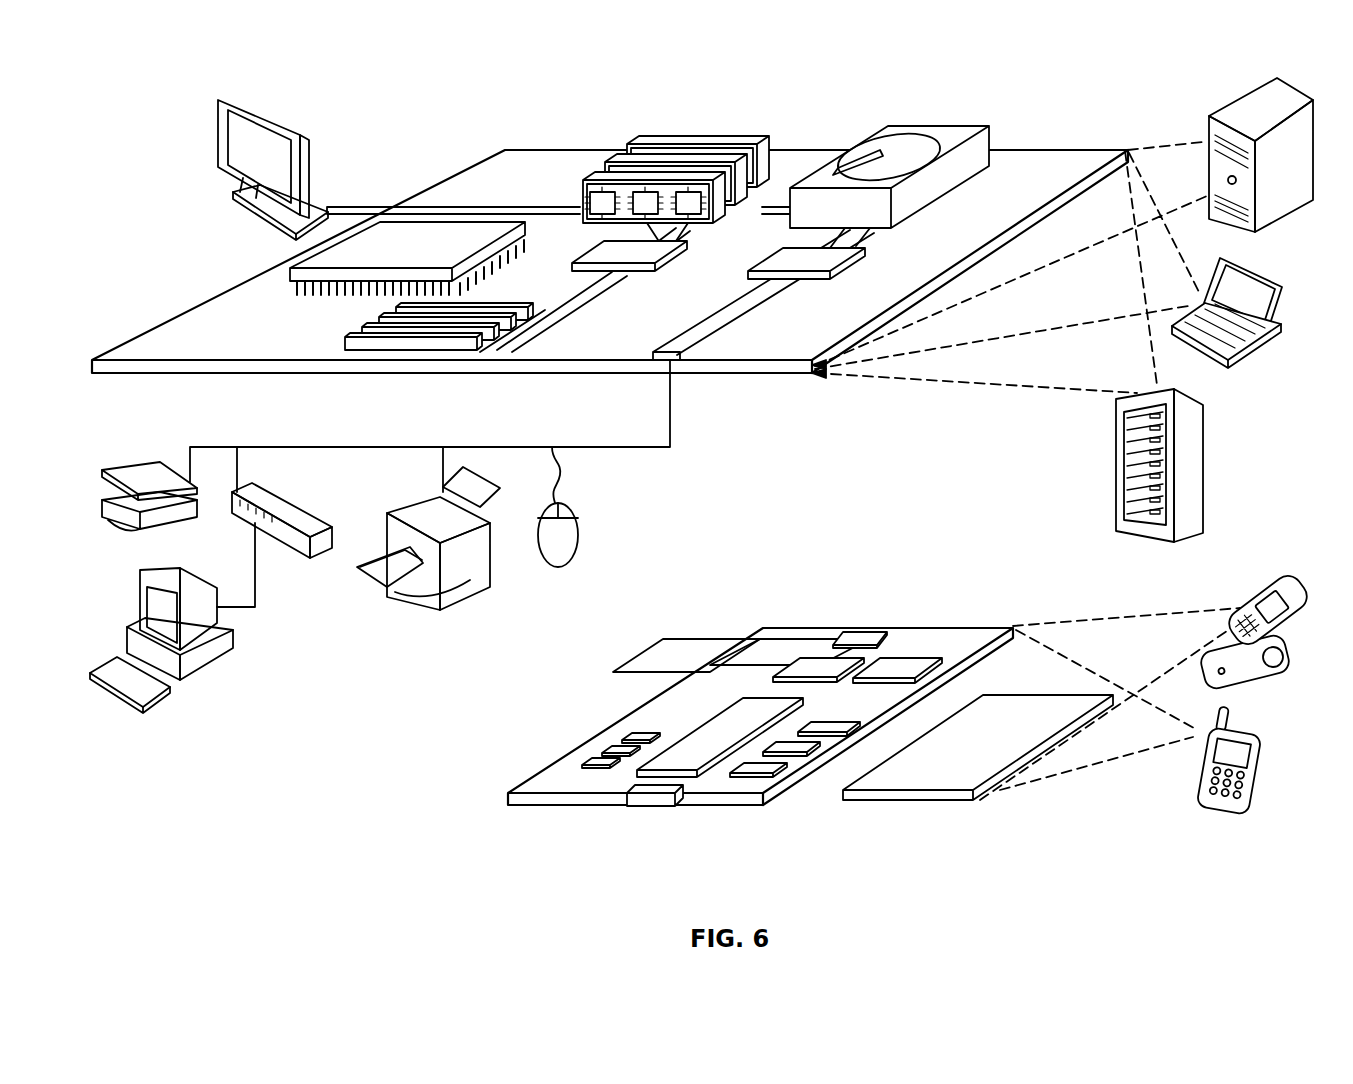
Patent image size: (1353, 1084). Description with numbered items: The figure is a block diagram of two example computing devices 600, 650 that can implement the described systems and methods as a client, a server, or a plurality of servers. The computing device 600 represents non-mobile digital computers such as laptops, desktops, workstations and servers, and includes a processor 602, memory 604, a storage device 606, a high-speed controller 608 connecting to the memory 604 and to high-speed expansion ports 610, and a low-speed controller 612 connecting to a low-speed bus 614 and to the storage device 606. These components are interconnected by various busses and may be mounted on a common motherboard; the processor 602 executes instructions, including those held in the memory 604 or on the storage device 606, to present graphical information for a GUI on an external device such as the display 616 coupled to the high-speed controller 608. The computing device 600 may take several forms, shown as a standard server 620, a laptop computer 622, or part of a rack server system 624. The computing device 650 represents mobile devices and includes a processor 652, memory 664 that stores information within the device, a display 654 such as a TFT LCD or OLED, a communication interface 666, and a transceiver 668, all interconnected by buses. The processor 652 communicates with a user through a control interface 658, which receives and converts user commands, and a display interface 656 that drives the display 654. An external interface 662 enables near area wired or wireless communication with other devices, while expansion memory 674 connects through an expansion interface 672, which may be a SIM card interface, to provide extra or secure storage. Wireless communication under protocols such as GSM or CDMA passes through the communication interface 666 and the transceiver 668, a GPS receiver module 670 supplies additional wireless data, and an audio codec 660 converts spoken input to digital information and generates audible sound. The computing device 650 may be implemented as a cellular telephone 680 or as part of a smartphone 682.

The computing device 600 is at (121, 106).
The processor 602 is at (290, 270).
The memory 604 is at (637, 145).
The storage device 606 is at (882, 135).
The high-speed controller 608 is at (610, 253).
The high-speed expansion ports 610 is at (370, 331).
The low-speed controller 612 is at (790, 260).
The low-speed bus 614 is at (688, 362).
The display 616 is at (224, 99).
The standard server 620 is at (1207, 135).
The laptop computer 622 is at (1276, 288).
The rack server system 624 is at (1116, 489).
The computing device 650 is at (484, 805).
The processor 652 is at (692, 762).
The display 654 is at (940, 780).
The display interface 656 is at (763, 768).
The control interface 658 is at (812, 758).
The audio codec 660 is at (826, 725).
The external interface 662 is at (657, 793).
The memory 664 is at (605, 752).
The communication interface 666 is at (820, 670).
The transceiver 668 is at (900, 667).
The GPS receiver module 670 is at (864, 633).
The expansion interface 672 is at (745, 640).
The expansion memory 674 is at (668, 640).
The cellular telephone 680 is at (1262, 582).
The smartphone 682 is at (1195, 772).